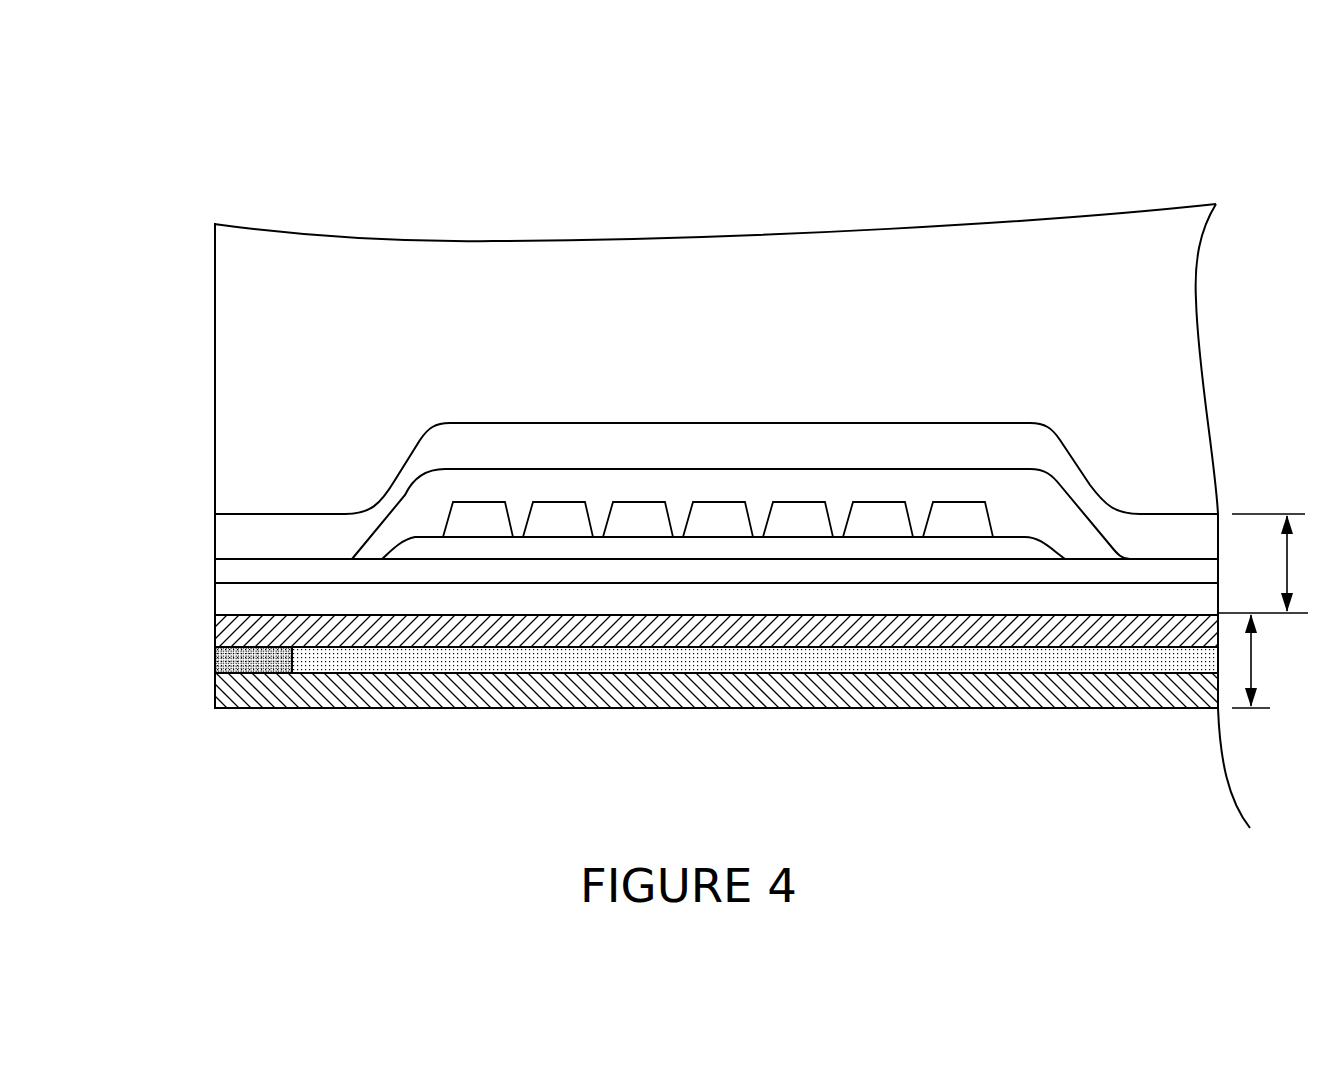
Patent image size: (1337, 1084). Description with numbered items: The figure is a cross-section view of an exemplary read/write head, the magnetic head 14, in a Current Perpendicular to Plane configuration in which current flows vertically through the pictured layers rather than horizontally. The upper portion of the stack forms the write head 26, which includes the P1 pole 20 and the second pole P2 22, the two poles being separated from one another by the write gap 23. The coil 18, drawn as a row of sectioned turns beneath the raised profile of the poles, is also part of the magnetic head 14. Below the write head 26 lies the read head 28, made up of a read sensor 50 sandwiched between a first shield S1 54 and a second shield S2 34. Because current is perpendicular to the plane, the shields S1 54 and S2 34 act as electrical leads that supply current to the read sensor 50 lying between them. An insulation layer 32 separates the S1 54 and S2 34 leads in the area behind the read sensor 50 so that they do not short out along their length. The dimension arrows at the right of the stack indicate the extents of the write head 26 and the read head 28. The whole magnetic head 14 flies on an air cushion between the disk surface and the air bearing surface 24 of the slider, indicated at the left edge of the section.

The magnetic head 14 is at (162, 254).
The air bearing surface 24 is at (200, 328).
The P1 pole 20 is at (530, 437).
The second pole P2 22 is at (233, 535).
The write gap 23 is at (215, 573).
The coil 18 is at (547, 517).
The second shield S2 34 is at (215, 628).
The read sensor 50 is at (220, 656).
The first shield S1 54 is at (233, 684).
The insulation layer 32 is at (433, 662).
The write head 26 is at (1288, 573).
The read head 28 is at (1253, 672).